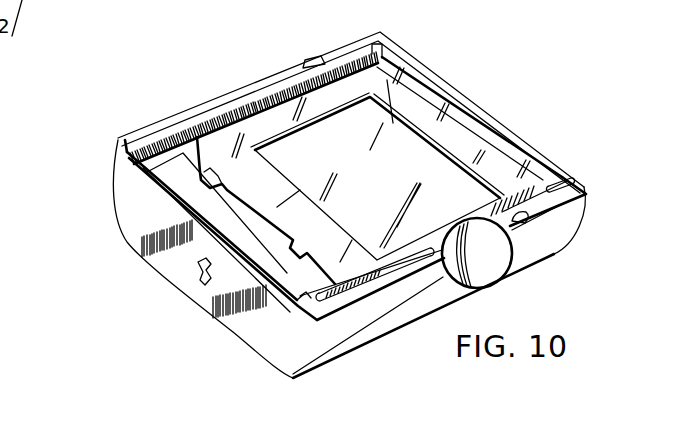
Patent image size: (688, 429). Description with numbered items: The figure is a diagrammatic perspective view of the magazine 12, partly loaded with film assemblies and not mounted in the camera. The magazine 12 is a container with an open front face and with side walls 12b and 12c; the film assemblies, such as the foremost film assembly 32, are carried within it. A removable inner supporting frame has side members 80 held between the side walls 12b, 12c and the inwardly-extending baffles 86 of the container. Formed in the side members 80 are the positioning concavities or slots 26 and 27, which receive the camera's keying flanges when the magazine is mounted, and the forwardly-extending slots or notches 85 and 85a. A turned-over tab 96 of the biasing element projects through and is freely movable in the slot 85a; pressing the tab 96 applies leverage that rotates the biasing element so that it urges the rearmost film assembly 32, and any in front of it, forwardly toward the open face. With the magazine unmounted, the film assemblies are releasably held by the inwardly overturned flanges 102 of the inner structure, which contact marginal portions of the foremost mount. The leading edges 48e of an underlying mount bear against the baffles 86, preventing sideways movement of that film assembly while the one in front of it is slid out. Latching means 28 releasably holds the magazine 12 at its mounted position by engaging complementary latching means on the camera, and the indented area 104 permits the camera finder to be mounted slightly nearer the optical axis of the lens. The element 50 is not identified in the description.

The magazine 12 is at (472, 56).
The side wall 12b is at (421, 63).
The side wall 12c is at (256, 84).
The slot 26 is at (367, 282).
The slot 27 is at (564, 181).
The latching means 28 is at (200, 272).
The film assembly 32 is at (468, 126).
The leading edge 48e is at (218, 167).
The inner ledge 50 is at (218, 208).
The side member 80 is at (374, 44).
The slot 85 is at (313, 60).
The slot 85a is at (526, 222).
The baffle 86 is at (213, 157).
The tab 96 is at (512, 206).
The overturned flange 102 is at (130, 163).
The indented area 104 is at (497, 273).